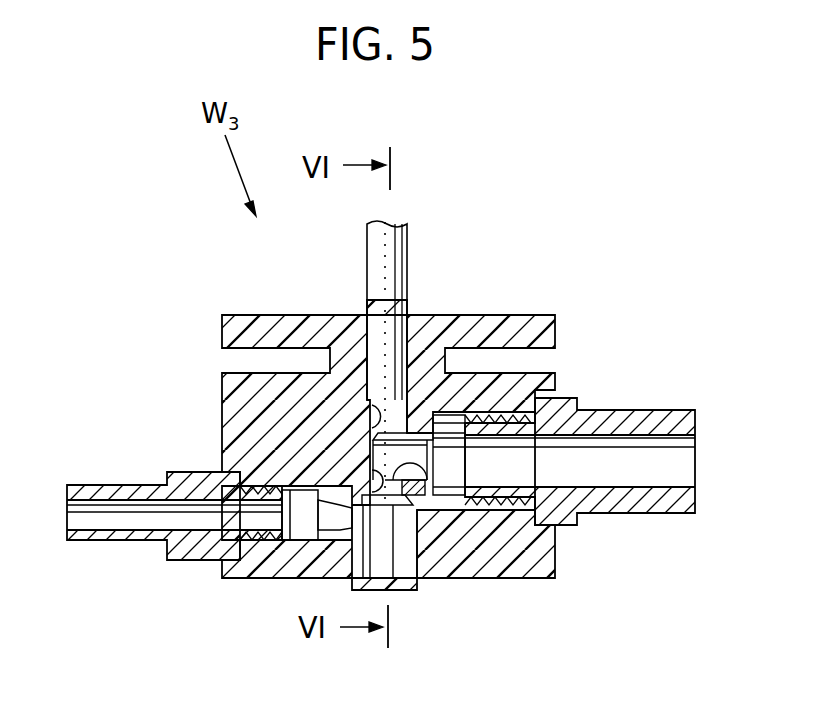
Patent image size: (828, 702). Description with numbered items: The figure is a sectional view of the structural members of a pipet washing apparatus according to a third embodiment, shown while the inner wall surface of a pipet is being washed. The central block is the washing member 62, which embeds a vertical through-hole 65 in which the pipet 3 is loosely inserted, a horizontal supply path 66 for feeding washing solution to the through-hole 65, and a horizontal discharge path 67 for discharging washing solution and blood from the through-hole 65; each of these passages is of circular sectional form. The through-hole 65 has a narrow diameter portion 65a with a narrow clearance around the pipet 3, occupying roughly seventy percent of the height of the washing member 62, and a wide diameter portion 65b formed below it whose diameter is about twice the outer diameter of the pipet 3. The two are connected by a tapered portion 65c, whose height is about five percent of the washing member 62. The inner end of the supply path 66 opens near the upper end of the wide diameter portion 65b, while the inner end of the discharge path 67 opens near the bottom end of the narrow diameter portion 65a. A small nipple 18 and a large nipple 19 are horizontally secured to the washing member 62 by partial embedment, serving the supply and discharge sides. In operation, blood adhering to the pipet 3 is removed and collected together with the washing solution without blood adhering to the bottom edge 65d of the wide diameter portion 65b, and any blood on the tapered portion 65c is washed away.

The pipet 3 is at (405, 262).
The washing member 62 is at (528, 315).
The large nipple 19 is at (652, 412).
The small nipple 18 is at (88, 546).
The through-hole 65 is at (370, 473).
The narrow diameter portion 65a is at (370, 404).
The wide diameter portion 65b is at (347, 578).
The tapered portion 65c is at (392, 503).
The bottom edge 65d is at (430, 505).
The supply path 66 is at (287, 578).
The discharge path 67 is at (457, 582).